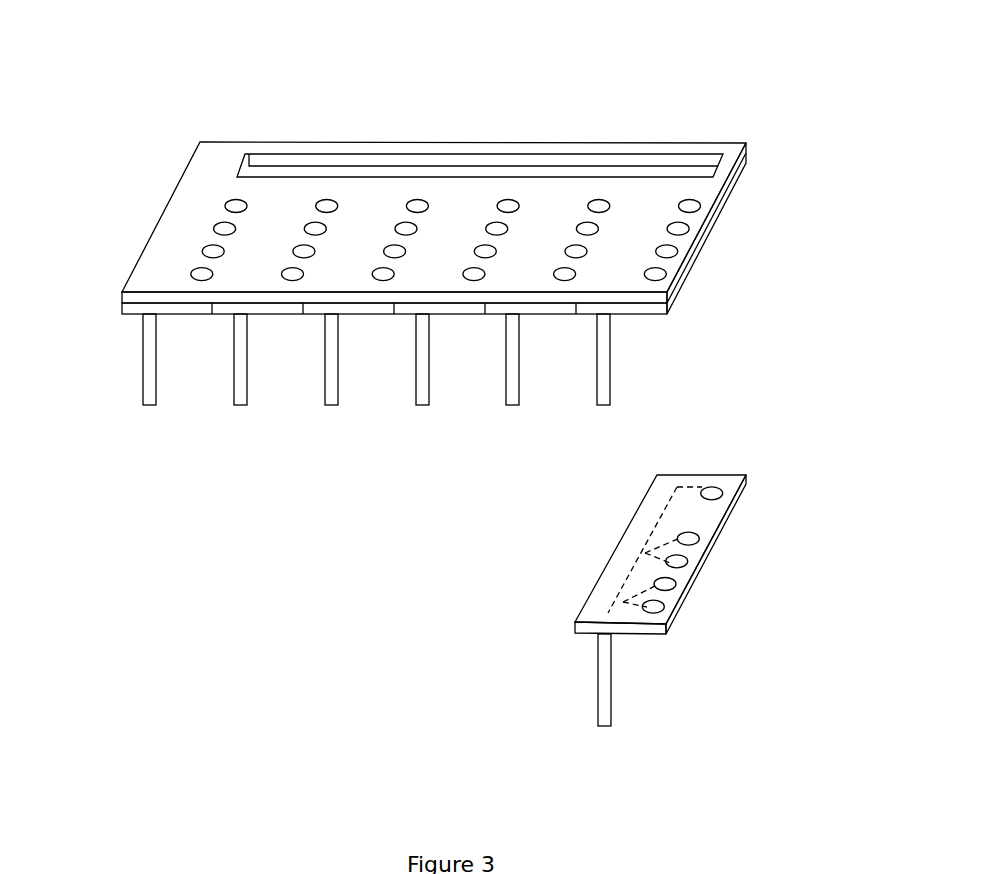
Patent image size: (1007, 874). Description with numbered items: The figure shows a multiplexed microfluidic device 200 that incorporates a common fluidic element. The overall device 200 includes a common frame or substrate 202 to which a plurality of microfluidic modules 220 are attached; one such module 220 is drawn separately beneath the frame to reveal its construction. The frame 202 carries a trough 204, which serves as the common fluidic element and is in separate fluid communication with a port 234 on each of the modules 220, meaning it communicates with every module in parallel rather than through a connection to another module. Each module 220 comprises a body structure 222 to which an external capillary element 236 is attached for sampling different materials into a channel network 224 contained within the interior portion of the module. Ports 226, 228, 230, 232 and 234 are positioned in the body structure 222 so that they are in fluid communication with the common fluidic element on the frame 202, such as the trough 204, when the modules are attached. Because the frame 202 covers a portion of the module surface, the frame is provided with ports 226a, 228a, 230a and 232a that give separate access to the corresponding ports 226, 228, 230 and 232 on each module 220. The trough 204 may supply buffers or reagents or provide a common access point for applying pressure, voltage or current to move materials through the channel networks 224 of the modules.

The multiplexed microfluidic device 200 is at (481, 375).
The common frame or substrate 202 is at (188, 187).
The trough 204 is at (518, 163).
The microfluidic module 220 is at (722, 522).
The body structure 222 is at (657, 318).
The channel network 224 is at (642, 544).
The port 226 is at (657, 612).
The port 228 is at (662, 587).
The port 230 is at (677, 563).
The port 232 is at (692, 533).
The port 234 is at (717, 498).
The frame port 226a is at (667, 283).
The frame port 228a is at (672, 260).
The frame port 230a is at (685, 232).
The frame port 232a is at (695, 202).
The external capillary element 236 is at (610, 678).